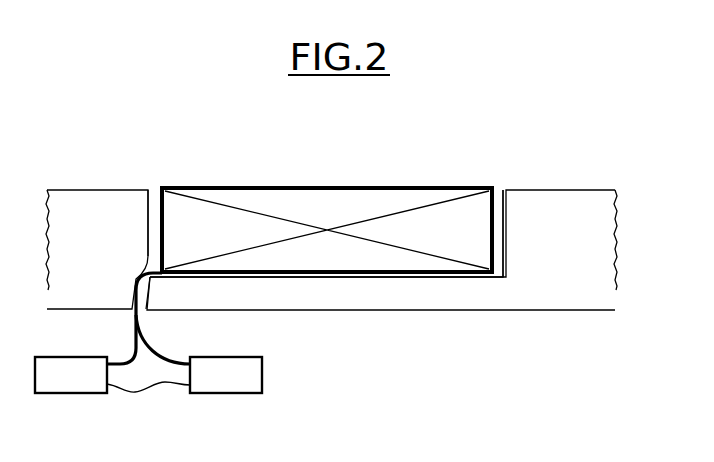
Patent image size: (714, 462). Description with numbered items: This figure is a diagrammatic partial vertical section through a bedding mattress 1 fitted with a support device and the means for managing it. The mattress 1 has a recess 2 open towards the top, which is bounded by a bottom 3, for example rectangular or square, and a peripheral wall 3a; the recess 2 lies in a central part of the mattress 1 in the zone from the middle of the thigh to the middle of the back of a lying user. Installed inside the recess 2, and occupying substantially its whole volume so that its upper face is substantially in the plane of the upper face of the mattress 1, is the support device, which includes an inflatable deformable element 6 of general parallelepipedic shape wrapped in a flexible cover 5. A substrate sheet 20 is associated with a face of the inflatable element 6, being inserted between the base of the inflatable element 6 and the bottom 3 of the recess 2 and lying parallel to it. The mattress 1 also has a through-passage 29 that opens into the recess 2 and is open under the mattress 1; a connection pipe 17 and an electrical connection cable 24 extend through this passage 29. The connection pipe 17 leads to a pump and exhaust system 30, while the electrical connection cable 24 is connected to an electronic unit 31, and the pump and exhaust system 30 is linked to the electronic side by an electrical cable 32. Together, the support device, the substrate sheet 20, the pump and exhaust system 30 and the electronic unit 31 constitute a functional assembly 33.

The bedding mattress 1 is at (600, 255).
The recess 2 is at (156, 200).
The bottom 3 is at (358, 272).
The peripheral wall 3a is at (503, 208).
The flexible cover 5 is at (331, 188).
The inflatable deformable element 6 is at (366, 203).
The connection pipe 17 is at (132, 335).
The substrate sheet 20 is at (293, 272).
The electrical connection cable 24 is at (162, 355).
The through-passage 29 is at (147, 297).
The pump and exhaust system 30 is at (71, 375).
The electronic unit 31 is at (226, 375).
The electrical cable 32 is at (150, 389).
The functional assembly 33 is at (201, 180).